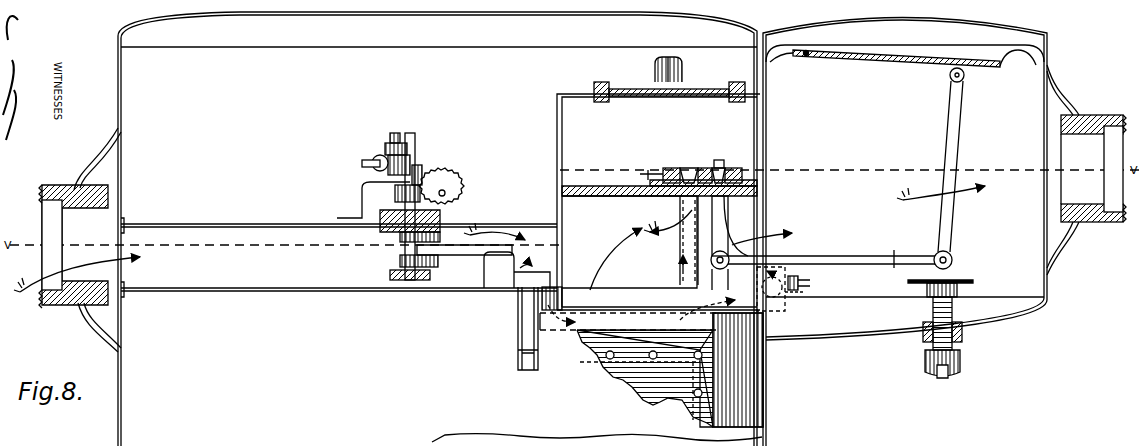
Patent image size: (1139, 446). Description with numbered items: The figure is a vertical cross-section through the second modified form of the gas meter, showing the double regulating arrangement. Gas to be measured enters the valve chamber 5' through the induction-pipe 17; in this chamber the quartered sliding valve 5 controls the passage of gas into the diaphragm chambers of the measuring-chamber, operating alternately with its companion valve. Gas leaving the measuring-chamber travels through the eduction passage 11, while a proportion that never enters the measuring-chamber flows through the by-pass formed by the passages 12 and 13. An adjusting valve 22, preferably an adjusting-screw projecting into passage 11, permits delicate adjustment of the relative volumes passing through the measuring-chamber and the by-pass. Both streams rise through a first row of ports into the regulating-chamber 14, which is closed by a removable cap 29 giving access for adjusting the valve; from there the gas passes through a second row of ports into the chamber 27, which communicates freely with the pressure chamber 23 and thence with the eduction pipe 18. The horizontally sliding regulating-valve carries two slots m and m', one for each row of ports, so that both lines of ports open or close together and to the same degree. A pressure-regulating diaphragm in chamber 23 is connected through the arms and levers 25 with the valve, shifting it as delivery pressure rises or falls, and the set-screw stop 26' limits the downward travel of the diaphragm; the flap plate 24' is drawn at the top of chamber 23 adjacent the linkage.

The sliding valve 5 is at (483, 255).
The valve chamber 5' is at (339, 257).
The eduction passage 11 is at (641, 322).
The by-pass passage 12 is at (639, 328).
The by-pass passage 13 is at (630, 243).
The regulating-chamber 14 is at (658, 202).
The induction-pipe 17 is at (77, 240).
The eduction pipe 18 is at (1086, 170).
The adjusting valve 22 is at (800, 283).
The pressure chamber 23 is at (905, 232).
The flap plate 24' is at (885, 151).
The arms and levers 25 is at (840, 250).
The set-screw stop 26' is at (955, 329).
The outlet chamber 27 is at (751, 243).
The removable cap 29 is at (628, 80).
The valve slot m is at (669, 162).
The valve slot m' is at (724, 162).